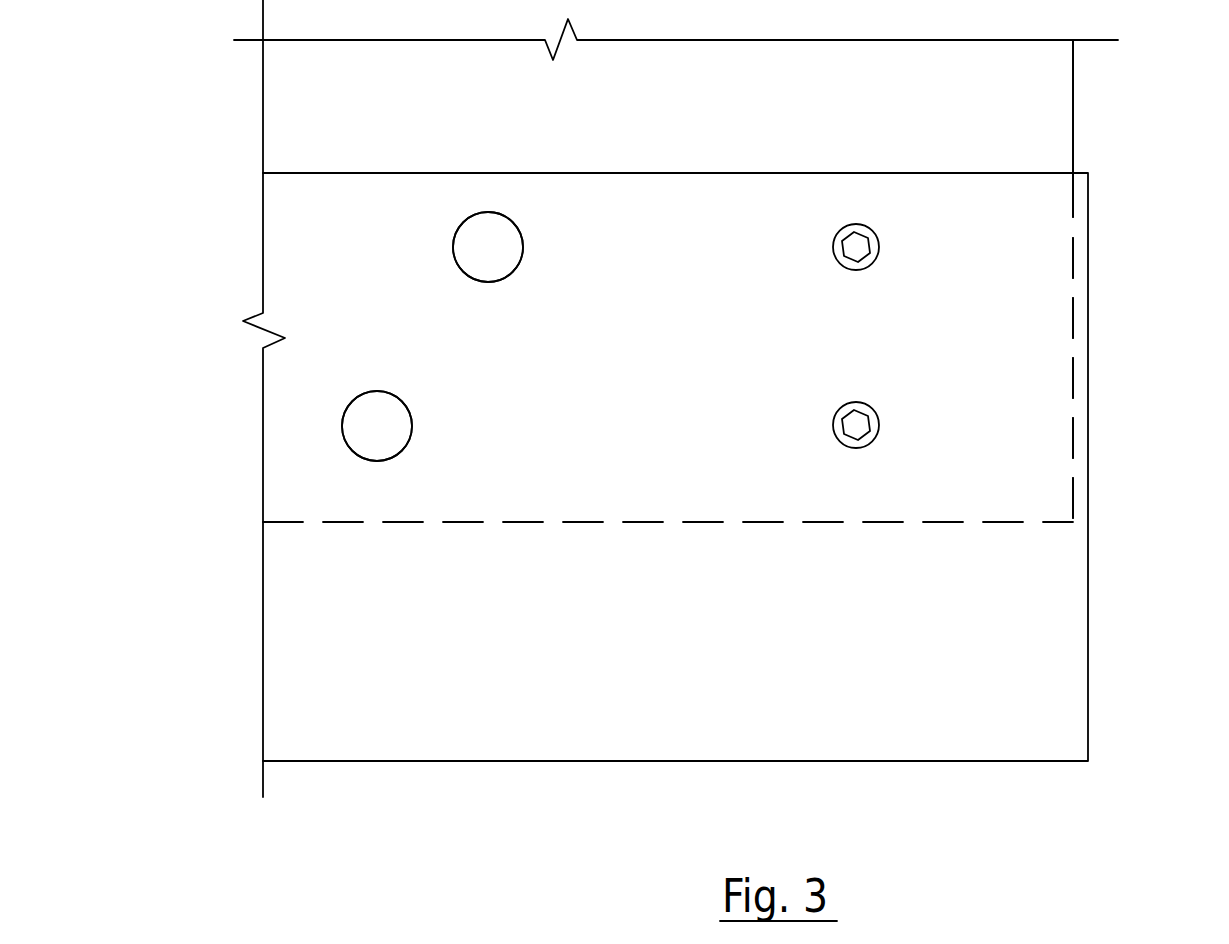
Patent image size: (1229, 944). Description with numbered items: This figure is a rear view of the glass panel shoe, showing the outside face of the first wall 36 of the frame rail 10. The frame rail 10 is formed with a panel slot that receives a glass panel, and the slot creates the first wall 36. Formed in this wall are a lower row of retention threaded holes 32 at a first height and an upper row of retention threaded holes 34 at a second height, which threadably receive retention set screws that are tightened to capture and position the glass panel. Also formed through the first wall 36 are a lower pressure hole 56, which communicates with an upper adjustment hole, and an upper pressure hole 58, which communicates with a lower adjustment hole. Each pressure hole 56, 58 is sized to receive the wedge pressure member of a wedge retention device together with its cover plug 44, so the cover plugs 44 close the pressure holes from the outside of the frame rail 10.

The frame rail 10 is at (807, 761).
The lower row of retention threaded holes 32 is at (875, 445).
The upper row of retention threaded holes 34 is at (877, 232).
The first wall 36 is at (1048, 415).
The cover plug 44 is at (480, 225).
The lower pressure hole 56 is at (342, 425).
The upper pressure hole 58 is at (458, 230).